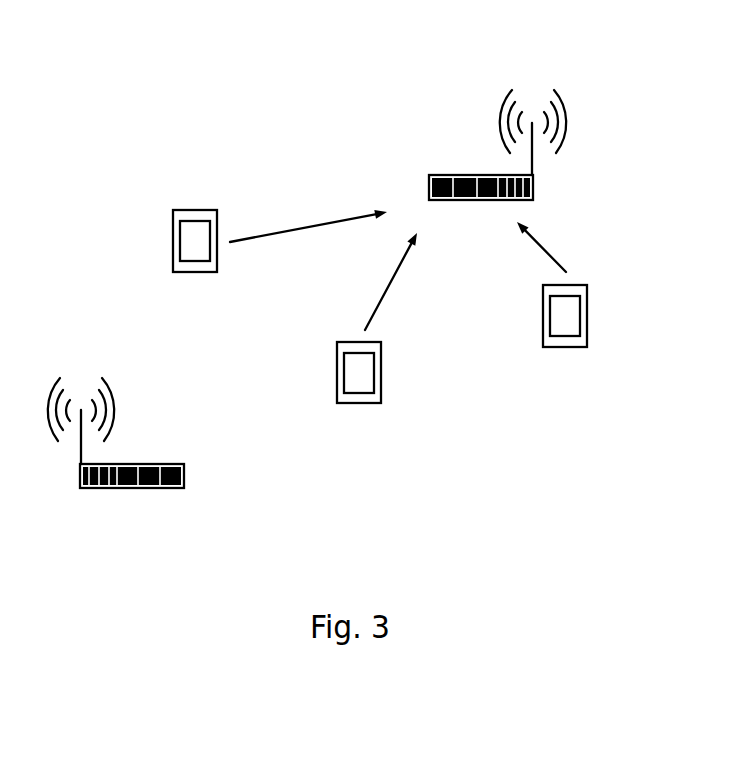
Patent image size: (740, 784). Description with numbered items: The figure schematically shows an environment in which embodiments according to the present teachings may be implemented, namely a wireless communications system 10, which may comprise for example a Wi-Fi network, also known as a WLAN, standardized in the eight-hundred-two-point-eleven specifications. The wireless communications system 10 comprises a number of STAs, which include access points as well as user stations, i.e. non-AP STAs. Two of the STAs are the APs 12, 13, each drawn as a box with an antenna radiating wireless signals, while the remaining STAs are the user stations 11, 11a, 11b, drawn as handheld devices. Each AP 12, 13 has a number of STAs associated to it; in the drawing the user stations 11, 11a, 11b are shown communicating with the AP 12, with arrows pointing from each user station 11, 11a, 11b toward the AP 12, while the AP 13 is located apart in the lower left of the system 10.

The wireless communications system 10 is at (414, 50).
The user station 11 is at (191, 268).
The user station 11a is at (562, 342).
The user station 11b is at (359, 400).
The access point 12 is at (533, 182).
The access point 13 is at (184, 471).